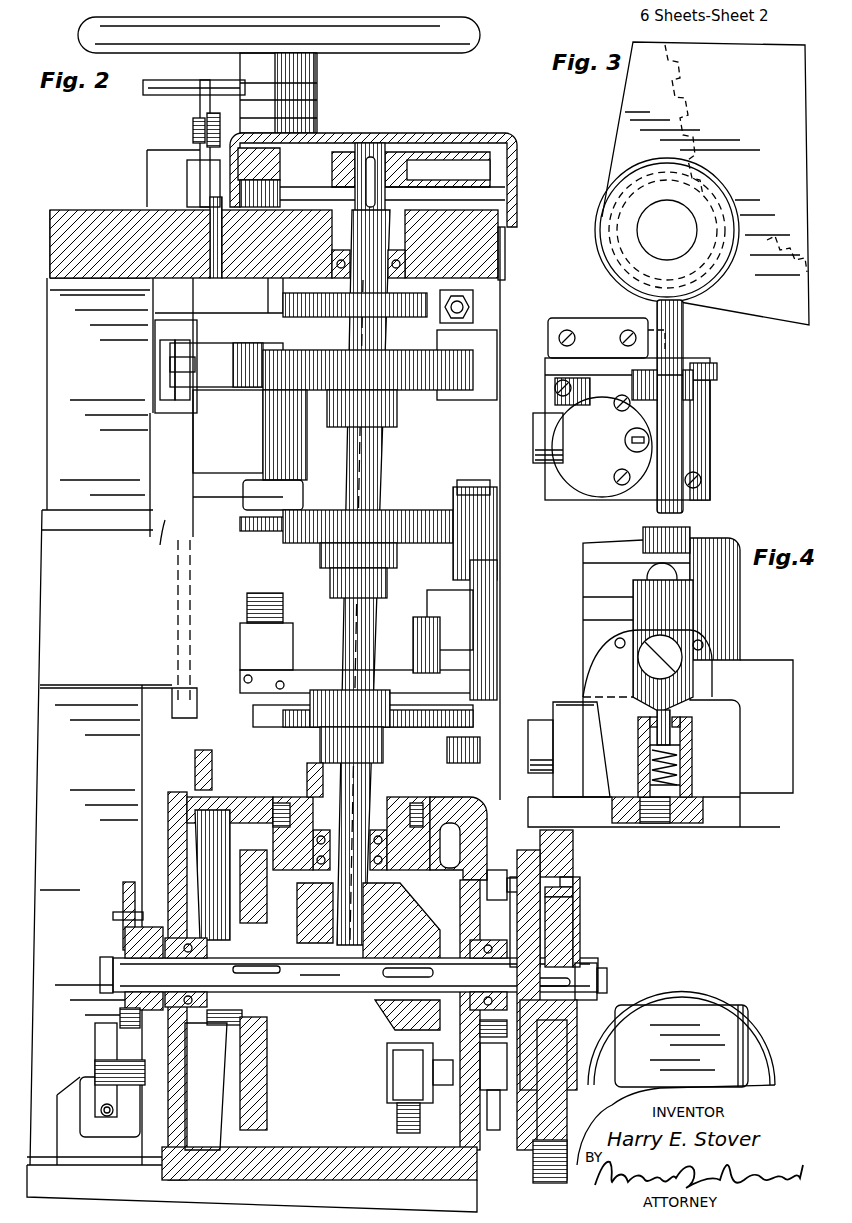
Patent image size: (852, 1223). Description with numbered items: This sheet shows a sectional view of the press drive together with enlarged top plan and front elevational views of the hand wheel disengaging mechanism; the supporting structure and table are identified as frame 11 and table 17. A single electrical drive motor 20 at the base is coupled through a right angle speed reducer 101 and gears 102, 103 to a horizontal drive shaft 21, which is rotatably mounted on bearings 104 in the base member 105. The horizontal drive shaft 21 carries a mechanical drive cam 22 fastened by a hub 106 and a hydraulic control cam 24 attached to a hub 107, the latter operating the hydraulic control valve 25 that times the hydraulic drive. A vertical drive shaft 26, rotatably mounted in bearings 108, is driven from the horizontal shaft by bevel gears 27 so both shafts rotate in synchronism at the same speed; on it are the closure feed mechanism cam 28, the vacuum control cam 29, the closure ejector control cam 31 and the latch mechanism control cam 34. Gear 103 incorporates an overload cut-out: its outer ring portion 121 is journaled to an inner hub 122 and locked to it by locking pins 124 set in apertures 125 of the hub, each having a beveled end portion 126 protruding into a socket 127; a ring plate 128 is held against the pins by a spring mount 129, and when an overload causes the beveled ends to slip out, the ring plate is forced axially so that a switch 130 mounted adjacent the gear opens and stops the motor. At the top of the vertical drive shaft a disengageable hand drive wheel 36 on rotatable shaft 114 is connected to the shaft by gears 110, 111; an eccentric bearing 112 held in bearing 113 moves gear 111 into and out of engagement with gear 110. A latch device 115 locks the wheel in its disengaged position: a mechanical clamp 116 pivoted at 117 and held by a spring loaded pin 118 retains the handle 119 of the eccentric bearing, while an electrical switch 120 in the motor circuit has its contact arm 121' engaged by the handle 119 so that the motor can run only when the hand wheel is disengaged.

In FIG. 2, the frame 11 is at (145, 450).
In FIG. 2, the table 17 is at (167, 523).
In FIG. 2, the drive motor 20 is at (702, 978).
In FIG. 2, the horizontal drive shaft 21 is at (362, 995).
In FIG. 2, the mechanical drive cam 22 is at (267, 1100).
In FIG. 2, the hydraulic control cam 24 is at (120, 892).
In FIG. 2, the hydraulic control valve 25 is at (73, 1095).
In FIG. 2, the vertical drive shaft 26 is at (375, 476).
In FIG. 2, the bevel gears 27 is at (383, 920).
In FIG. 2, the closure feed mechanism cam 28 is at (292, 367).
In FIG. 2, the vacuum control cam 29 is at (287, 302).
In FIG. 2, the closure ejector control cam 31 is at (285, 532).
In FIG. 2, the latch mechanism control cam 34 is at (275, 722).
In FIG. 2, the disengageable hand drive wheel 36 is at (426, 56).
In FIG. 4, the disengageable hand drive wheel 36 is at (583, 553).
In FIG. 2, the right angle speed reducer 101 is at (705, 1030).
In FIG. 2, the gear 102 is at (533, 1172).
In FIG. 2, the gear 103 is at (580, 905).
In FIG. 2, the bearings 104 is at (205, 930).
In FIG. 2, the base member 105 is at (175, 838).
In FIG. 2, the hub 106 is at (288, 1017).
In FIG. 2, the hub 107 is at (123, 935).
In FIG. 2, the bearings 108 is at (407, 258).
In FIG. 2, the gear 110 is at (400, 160).
In FIG. 3, the gear 110 is at (627, 103).
In FIG. 3, the gear 111 is at (610, 168).
In FIG. 2, the eccentric bearing 112 is at (317, 92).
In FIG. 3, the eccentric bearing 112 is at (725, 282).
In FIG. 4, the eccentric bearing 112 is at (583, 583).
In FIG. 2, the bearing 113 is at (310, 120).
In FIG. 4, the bearing 113 is at (583, 612).
In FIG. 2, the rotatable shaft 114 is at (300, 212).
In FIG. 3, the rotatable shaft 114 is at (672, 212).
In FIG. 4, the rotatable shaft 114 is at (690, 540).
In FIG. 2, the latch device 115 is at (193, 125).
In FIG. 3, the latch device 115 is at (721, 427).
In FIG. 4, the latch device 115 is at (753, 641).
In FIG. 3, the mechanical clamp 116 is at (715, 378).
In FIG. 4, the mechanical clamp 116 is at (683, 620).
In FIG. 3, the pivot 117 is at (685, 362).
In FIG. 4, the pivot 117 is at (680, 668).
In FIG. 4, the spring loaded pin 118 is at (692, 725).
In FIG. 2, the handle 119 is at (145, 92).
In FIG. 3, the handle 119 is at (672, 462).
In FIG. 4, the handle 119 is at (668, 578).
In FIG. 3, the electrical switch 120 is at (578, 455).
In FIG. 4, the electrical switch 120 is at (570, 713).
In FIG. 2, the outer ring portion 121 is at (576, 853).
In FIG. 3, the contact arm 121' is at (627, 479).
In FIG. 2, the inner hub 122 is at (572, 948).
In FIG. 2, the locking pins 124 is at (527, 877).
In FIG. 2, the apertures 125 is at (577, 920).
In FIG. 2, the beveled end portion 126 is at (575, 880).
In FIG. 2, the socket 127 is at (562, 895).
In FIG. 2, the ring plate 128 is at (513, 1080).
In FIG. 2, the spring mount 129 is at (487, 885).
In FIG. 2, the switch 130 is at (388, 1085).